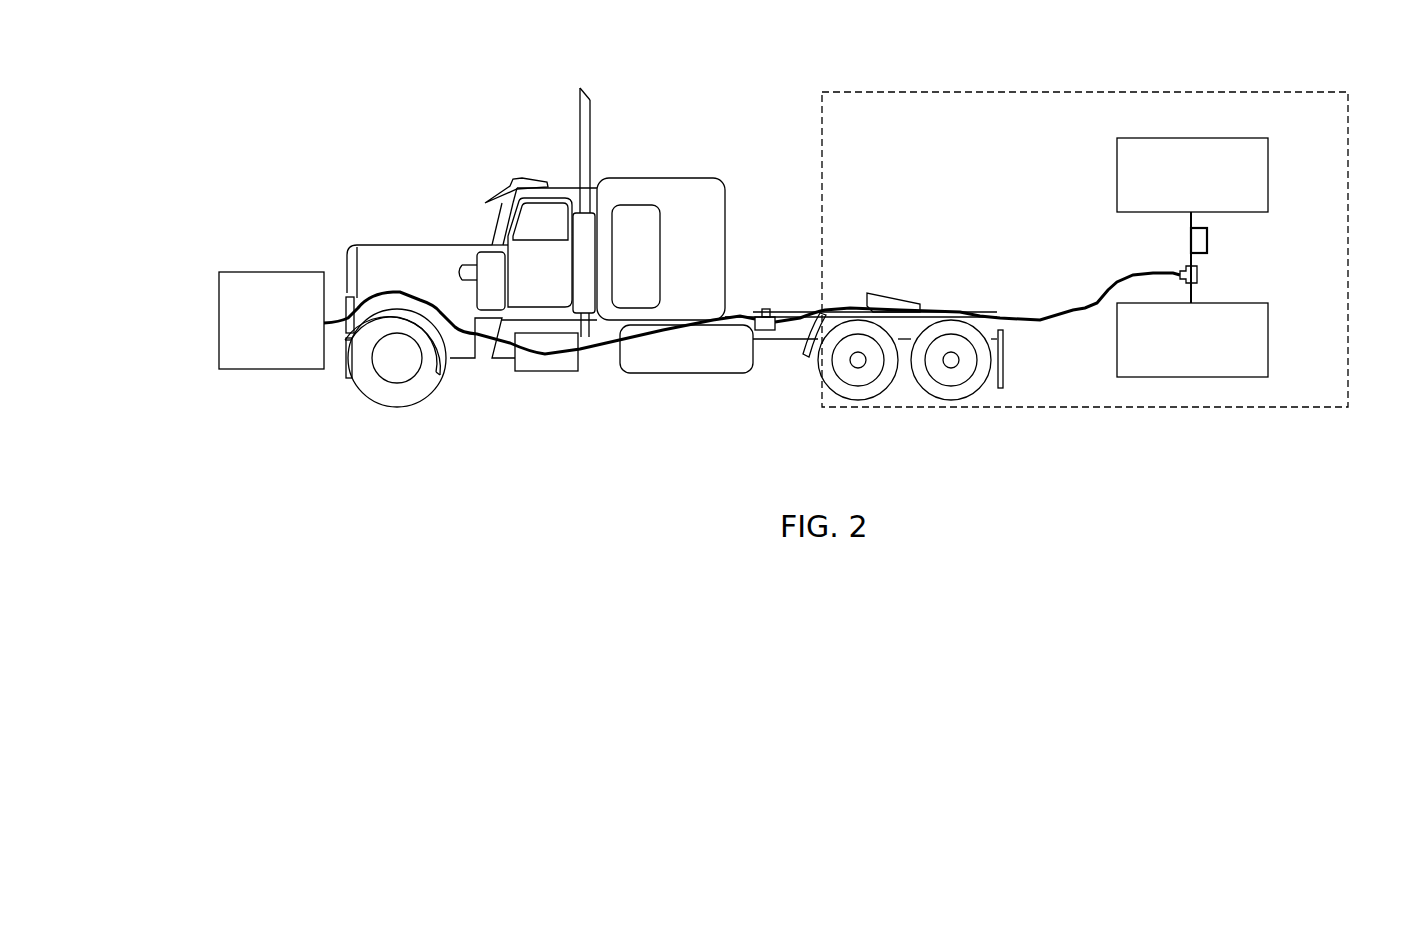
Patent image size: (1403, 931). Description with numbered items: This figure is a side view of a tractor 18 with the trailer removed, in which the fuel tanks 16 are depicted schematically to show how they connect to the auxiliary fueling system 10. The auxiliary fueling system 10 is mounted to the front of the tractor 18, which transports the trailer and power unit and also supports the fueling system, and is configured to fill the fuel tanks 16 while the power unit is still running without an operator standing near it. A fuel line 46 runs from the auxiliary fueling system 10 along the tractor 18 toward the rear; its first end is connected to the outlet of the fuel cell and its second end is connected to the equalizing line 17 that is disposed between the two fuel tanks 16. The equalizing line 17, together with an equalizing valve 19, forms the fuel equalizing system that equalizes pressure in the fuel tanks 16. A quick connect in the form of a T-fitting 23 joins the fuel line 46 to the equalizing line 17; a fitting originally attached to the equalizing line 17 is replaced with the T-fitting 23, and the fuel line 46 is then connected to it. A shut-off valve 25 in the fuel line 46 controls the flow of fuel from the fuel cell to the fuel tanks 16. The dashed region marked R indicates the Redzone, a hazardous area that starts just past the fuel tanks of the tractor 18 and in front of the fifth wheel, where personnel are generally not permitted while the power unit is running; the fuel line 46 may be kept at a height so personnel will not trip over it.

The auxiliary fueling system 10 is at (258, 330).
The fuel tanks 16 is at (1178, 190).
The equalizing line 17 is at (1190, 225).
The tractor 18 is at (431, 190).
The equalizing valve 19 is at (1207, 250).
The T-fitting 23 is at (1181, 267).
The shut-off valve 25 is at (764, 306).
The fuel line 46 is at (601, 357).
The Redzone R is at (968, 92).